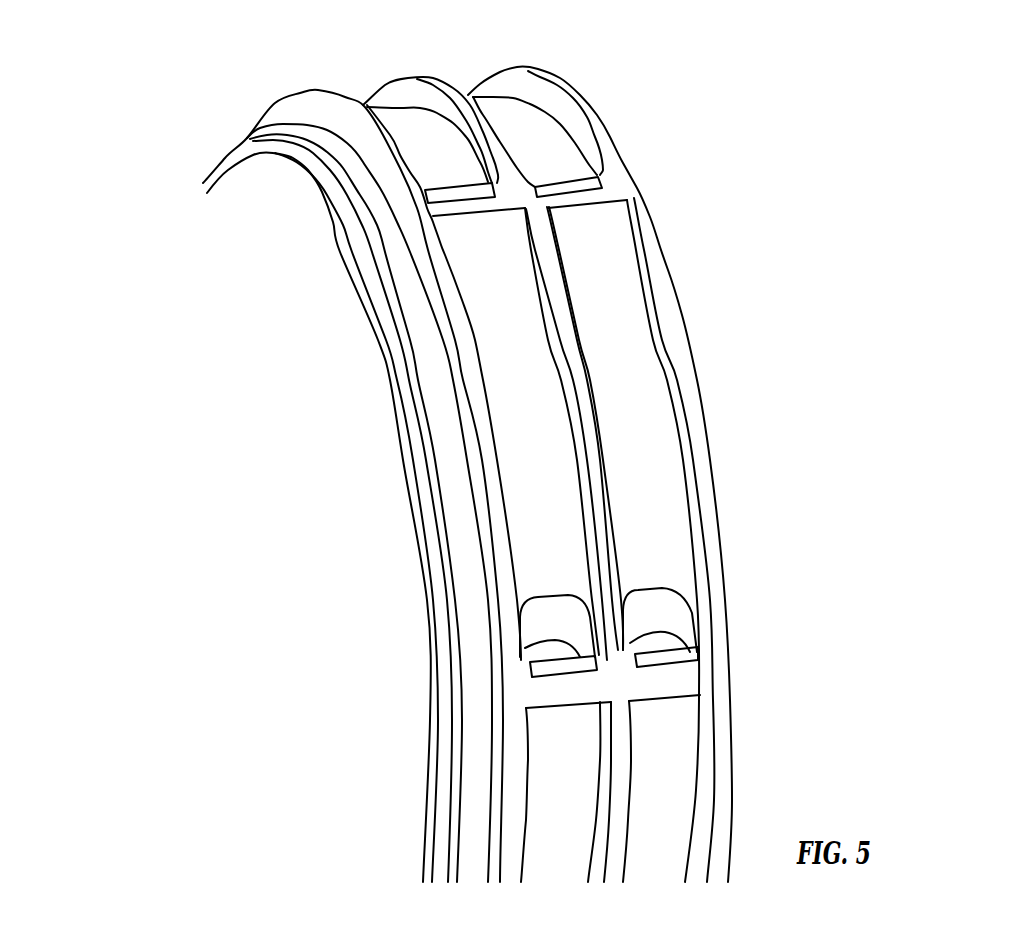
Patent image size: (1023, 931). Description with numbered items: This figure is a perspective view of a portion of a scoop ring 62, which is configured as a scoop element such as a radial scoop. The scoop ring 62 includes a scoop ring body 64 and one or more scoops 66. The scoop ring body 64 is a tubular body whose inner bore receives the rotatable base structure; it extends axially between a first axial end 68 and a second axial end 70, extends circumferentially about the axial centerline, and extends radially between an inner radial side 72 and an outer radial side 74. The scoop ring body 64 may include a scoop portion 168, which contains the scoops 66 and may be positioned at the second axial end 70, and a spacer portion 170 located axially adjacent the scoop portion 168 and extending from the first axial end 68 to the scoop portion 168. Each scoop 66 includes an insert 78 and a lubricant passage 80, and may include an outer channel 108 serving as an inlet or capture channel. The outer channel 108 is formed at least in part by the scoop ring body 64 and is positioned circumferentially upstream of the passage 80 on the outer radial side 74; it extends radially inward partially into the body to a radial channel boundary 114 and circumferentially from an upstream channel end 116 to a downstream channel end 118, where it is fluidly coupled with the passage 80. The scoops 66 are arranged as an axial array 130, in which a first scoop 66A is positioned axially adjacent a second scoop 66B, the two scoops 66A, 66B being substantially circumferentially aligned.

The scoop ring 62 is at (801, 105).
The scoop ring body 64 is at (692, 410).
The scoops 66 is at (536, 474).
The first scoop 66A is at (353, 486).
The second scoop 66B is at (669, 474).
The first axial end 68 is at (378, 364).
The second axial end 70 is at (696, 271).
The inner radial side 72 is at (403, 603).
The outer radial side 74 is at (542, 97).
The insert 78 is at (694, 660).
The passage 80 is at (582, 576).
The outer channel 108 is at (557, 493).
The radial channel boundary 114 is at (537, 453).
The upstream channel end 116 is at (477, 217).
The downstream channel end 118 is at (555, 596).
The axial array 130 is at (884, 424).
The scoop portion 168 is at (641, 153).
The spacer portion 170 is at (380, 245).